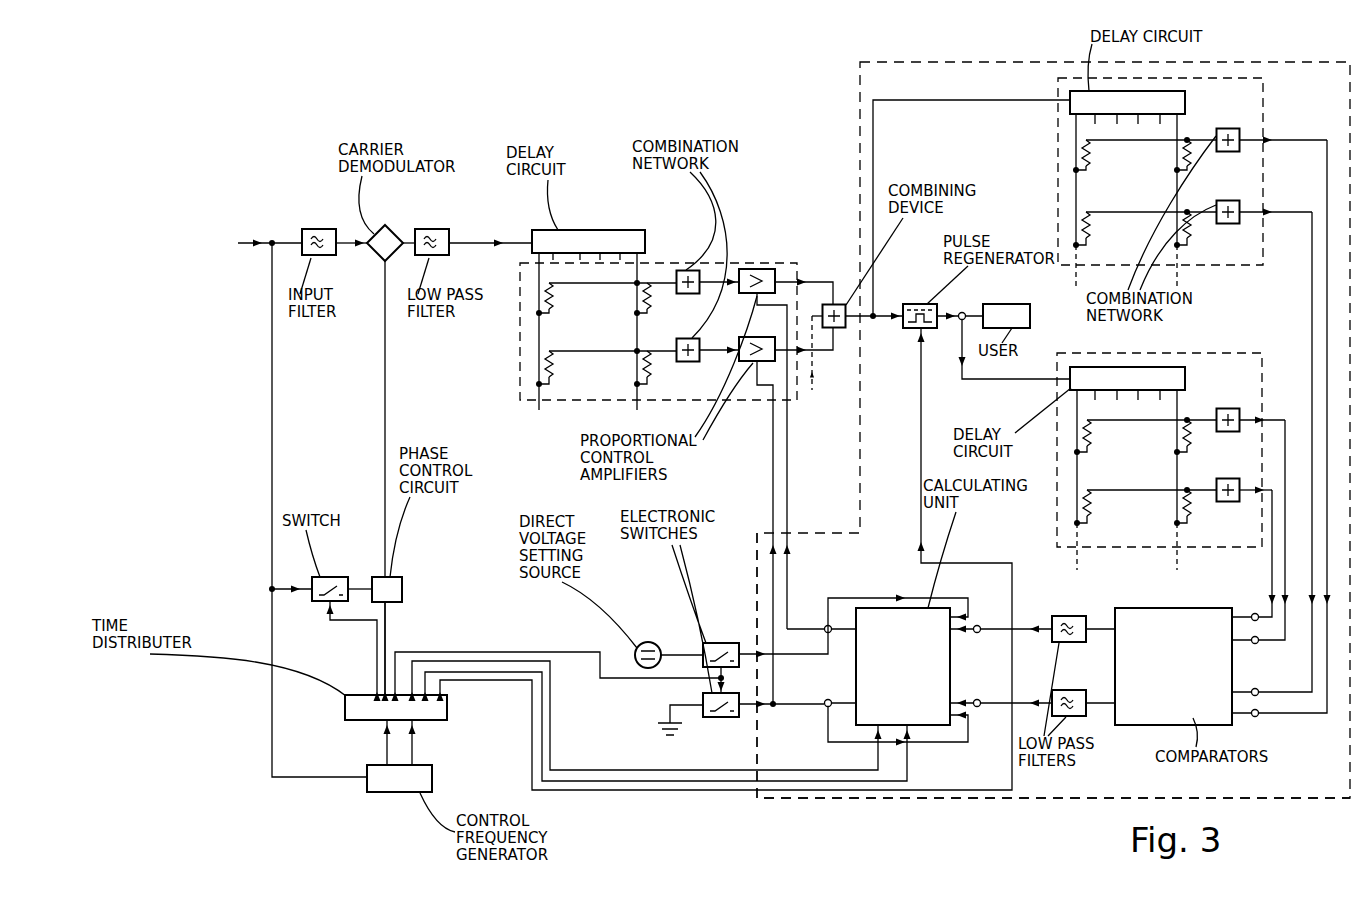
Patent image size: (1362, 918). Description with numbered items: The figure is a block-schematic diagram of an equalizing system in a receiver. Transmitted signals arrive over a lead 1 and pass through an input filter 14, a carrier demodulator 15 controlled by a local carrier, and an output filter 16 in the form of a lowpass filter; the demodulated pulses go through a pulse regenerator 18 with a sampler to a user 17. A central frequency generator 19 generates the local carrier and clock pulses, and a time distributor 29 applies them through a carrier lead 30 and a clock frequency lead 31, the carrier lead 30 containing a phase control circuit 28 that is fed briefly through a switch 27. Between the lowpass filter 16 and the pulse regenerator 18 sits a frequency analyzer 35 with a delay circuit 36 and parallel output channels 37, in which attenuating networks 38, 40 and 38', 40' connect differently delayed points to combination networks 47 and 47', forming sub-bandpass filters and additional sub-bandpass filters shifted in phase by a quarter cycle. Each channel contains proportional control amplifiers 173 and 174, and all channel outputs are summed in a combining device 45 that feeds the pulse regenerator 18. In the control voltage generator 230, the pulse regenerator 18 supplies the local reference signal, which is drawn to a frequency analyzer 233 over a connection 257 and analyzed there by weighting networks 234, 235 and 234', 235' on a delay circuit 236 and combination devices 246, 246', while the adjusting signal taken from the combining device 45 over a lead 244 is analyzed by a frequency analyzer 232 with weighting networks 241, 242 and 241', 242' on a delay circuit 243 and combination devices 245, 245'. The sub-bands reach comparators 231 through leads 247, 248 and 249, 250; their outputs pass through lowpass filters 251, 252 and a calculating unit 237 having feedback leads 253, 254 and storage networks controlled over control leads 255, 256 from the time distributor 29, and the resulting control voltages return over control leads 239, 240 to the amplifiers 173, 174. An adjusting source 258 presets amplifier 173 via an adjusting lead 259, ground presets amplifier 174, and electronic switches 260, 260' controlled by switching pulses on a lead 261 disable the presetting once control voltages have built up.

The lead 1 is at (240, 243).
The input filter 14 is at (312, 239).
The carrier demodulator 15 is at (385, 239).
The output filter 16 is at (429, 239).
The user 17 is at (1014, 292).
The pulse regenerator 18 is at (927, 292).
The central frequency generator 19 is at (432, 778).
The switch 27 is at (324, 577).
The phase control circuit 28 is at (397, 577).
The time distributor 29 is at (345, 702).
The carrier lead 30 is at (385, 641).
The clock frequency lead 31 is at (532, 748).
The frequency analyzer 35 is at (597, 222).
The delay circuit 36 is at (645, 240).
The output channels 37 is at (797, 263).
The attenuating network 38 is at (563, 305).
The attenuating network 38' is at (566, 373).
The attenuating network 40 is at (660, 303).
The attenuating network 40' is at (663, 371).
The combining device 45 is at (863, 305).
The combination network 47 is at (708, 266).
The combination network 47' is at (670, 343).
The proportional control amplifier 173 is at (756, 270).
The proportional control amplifier 174 is at (745, 338).
The control voltage generator 230 is at (855, 72).
The comparators 231 is at (1177, 608).
The frequency analyzer 232 is at (1265, 95).
The frequency analyzer 233 is at (1250, 366).
The weighting network 234 is at (1110, 440).
The weighting network 234' is at (1112, 509).
The weighting network 235 is at (1207, 439).
The weighting network 235' is at (1209, 516).
The delay circuit 236 is at (1185, 374).
The calculating unit 237 is at (999, 691).
The control lead 239 is at (787, 570).
The control lead 240 is at (773, 560).
The weighting network 241 is at (1112, 156).
The weighting network 241' is at (1112, 230).
The weighting network 242 is at (1207, 167).
The weighting network 242' is at (1211, 233).
The delay circuit 243 is at (1185, 100).
The lead 244 is at (933, 100).
The combination device 245 is at (1272, 130).
The combination device 245' is at (1268, 202).
The combination device 246 is at (1263, 400).
The combination device 246' is at (1226, 481).
The lead 247 is at (1327, 297).
The lead 248 is at (1312, 274).
The lead 249 is at (1285, 564).
The lead 250 is at (1272, 592).
The lowpass filter 251 is at (1068, 616).
The lowpass filter 252 is at (1072, 690).
The feedback lead 253 is at (862, 598).
The feedback lead 254 is at (928, 744).
The control lead 255 is at (550, 686).
The control lead 256 is at (542, 718).
The connection line 257 is at (994, 381).
The adjusting source 258 is at (648, 642).
The adjusting lead 259 is at (826, 665).
The electronic switch 260 is at (720, 649).
The electronic switch 260' is at (693, 706).
The lead 261 is at (462, 652).